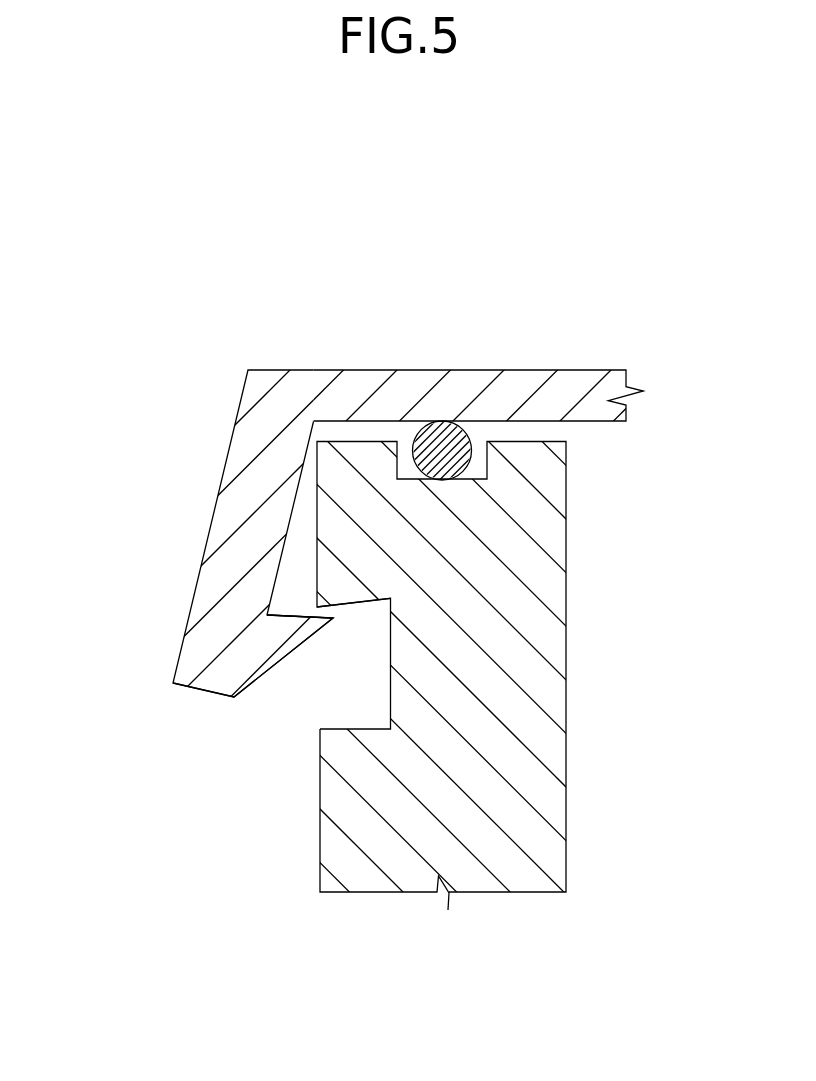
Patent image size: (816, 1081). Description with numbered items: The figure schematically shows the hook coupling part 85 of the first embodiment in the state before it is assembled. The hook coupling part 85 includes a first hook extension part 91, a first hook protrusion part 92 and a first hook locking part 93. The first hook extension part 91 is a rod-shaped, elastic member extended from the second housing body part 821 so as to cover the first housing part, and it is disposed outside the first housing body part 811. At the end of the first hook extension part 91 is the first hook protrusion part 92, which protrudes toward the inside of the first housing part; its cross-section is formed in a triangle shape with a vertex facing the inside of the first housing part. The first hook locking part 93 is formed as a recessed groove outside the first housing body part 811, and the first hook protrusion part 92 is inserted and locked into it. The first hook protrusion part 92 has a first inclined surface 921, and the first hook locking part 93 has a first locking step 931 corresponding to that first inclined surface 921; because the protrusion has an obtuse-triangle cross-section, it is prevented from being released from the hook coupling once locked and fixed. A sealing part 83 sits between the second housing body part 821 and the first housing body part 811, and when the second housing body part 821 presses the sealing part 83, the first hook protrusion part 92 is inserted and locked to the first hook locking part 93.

The hook coupling part 85 is at (126, 565).
The first hook extension part 91 is at (231, 443).
The first hook protrusion part 92 is at (278, 664).
The first inclined surface 921 is at (293, 613).
The first hook locking part 93 is at (390, 687).
The first locking step 931 is at (345, 605).
The sealing part 83 is at (442, 450).
The first housing body part 811 is at (318, 845).
The second housing body part 821 is at (418, 370).